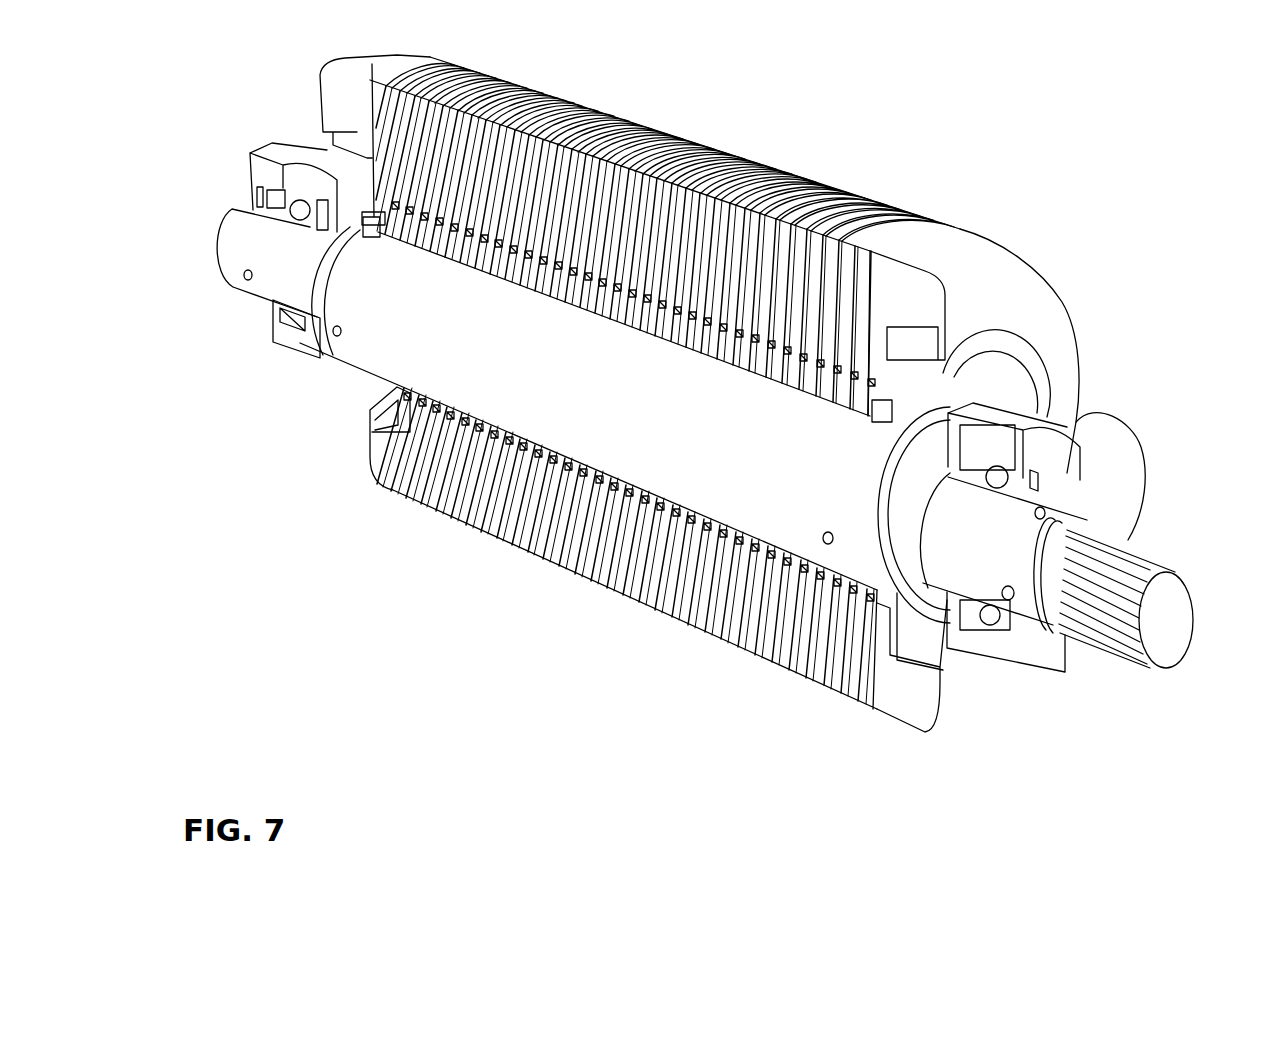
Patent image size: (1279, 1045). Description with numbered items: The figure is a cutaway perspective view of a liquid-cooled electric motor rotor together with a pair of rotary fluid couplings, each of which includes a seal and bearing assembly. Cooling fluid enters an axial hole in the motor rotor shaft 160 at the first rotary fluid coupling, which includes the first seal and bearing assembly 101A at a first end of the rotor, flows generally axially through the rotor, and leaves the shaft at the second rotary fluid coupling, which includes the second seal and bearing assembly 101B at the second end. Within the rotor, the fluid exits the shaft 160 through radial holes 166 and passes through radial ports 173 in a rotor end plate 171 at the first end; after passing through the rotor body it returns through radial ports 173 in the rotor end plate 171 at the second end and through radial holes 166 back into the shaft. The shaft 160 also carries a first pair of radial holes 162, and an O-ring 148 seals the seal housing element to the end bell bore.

The first seal and bearing assembly 101A is at (332, 151).
The second seal and bearing assembly 101B is at (1062, 398).
The O-ring 148 is at (990, 375).
The rotor end plate 171 is at (993, 372).
The radial holes 162 is at (248, 281).
The radial holes 166 is at (344, 331).
The radial ports 173 is at (350, 232).
The shaft 160 is at (606, 394).